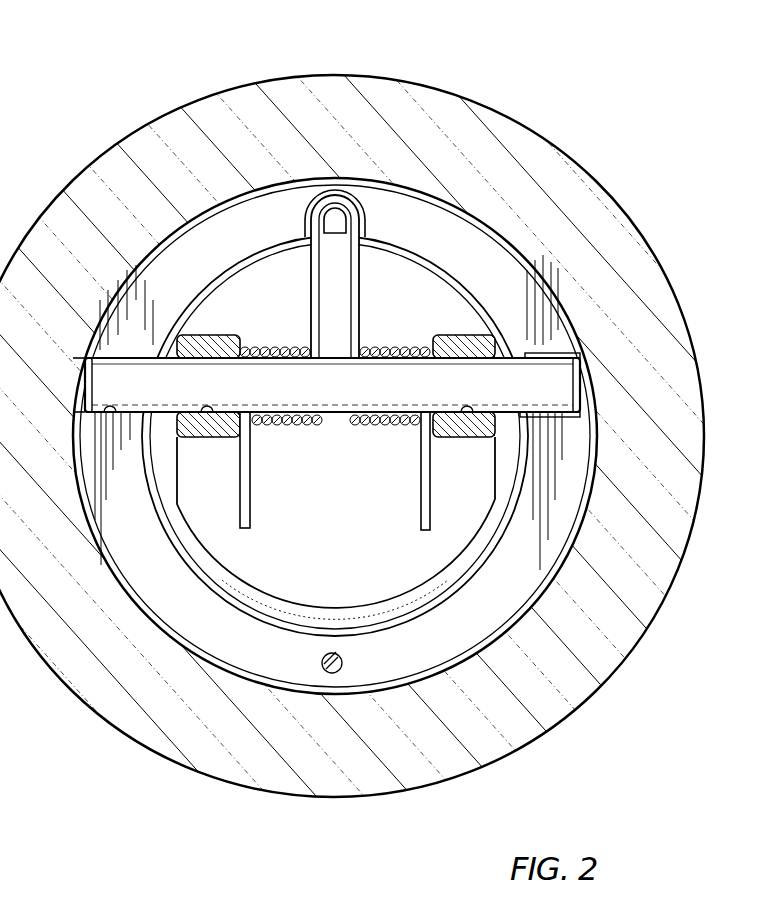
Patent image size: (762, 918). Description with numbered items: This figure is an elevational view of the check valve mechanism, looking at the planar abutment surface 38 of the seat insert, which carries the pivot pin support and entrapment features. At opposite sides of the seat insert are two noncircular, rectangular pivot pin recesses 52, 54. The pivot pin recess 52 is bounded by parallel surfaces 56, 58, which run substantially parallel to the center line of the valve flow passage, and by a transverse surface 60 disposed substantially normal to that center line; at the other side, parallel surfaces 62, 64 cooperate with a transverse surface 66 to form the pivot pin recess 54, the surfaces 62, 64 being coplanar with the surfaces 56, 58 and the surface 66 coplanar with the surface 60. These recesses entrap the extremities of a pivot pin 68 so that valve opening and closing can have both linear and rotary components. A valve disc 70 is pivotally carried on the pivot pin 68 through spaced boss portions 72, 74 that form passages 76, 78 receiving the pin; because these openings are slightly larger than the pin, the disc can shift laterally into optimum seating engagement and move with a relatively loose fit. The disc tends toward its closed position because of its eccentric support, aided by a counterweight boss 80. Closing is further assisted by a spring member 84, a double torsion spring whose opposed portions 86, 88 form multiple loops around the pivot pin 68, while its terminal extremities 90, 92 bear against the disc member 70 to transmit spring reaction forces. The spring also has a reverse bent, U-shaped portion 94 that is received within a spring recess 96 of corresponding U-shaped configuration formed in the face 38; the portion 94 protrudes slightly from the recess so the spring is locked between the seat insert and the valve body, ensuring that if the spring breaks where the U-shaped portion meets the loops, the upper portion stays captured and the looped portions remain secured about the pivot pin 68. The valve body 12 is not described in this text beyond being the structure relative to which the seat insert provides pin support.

The housing 12 is at (233, 102).
The planar abutment surface 38 is at (460, 235).
The pivot pin recess 52 is at (62, 378).
The pivot pin recess 54 is at (600, 385).
The parallel surface 56 is at (85, 357).
The parallel surface 58 is at (108, 411).
The transverse surface 60 is at (80, 395).
The parallel surface 62 is at (590, 365).
The parallel surface 64 is at (593, 407).
The transverse surface 66 is at (598, 403).
The pivot pin 68 is at (535, 398).
The valve disc 70 is at (300, 608).
The boss portion 72 is at (180, 345).
The boss portion 74 is at (493, 341).
The pivot pin passage 76 is at (207, 405).
The pivot pin passage 78 is at (463, 412).
The counterweight boss 80 is at (210, 530).
The spring member 84 is at (358, 300).
The opposed looped portion 86 is at (282, 345).
The opposed looped portion 88 is at (400, 345).
The terminal extremity 90 is at (250, 513).
The terminal extremity 92 is at (425, 524).
The reverse bent portion 94 is at (347, 200).
The spring recess 96 is at (308, 207).